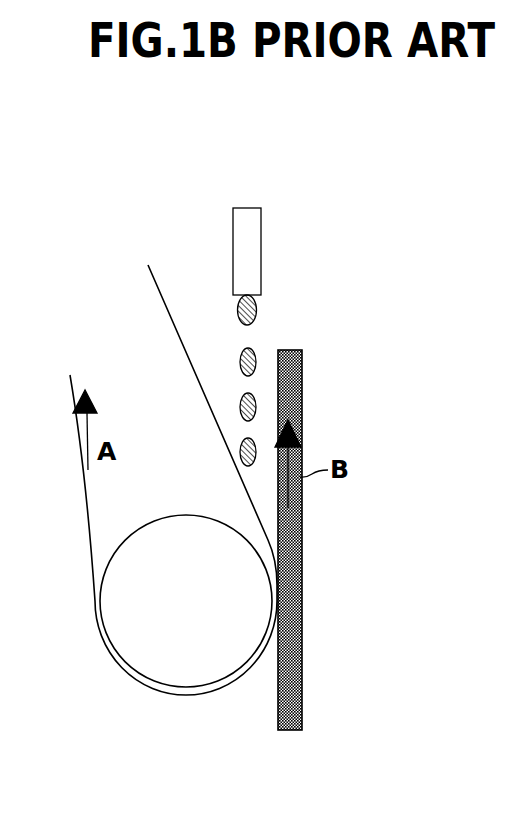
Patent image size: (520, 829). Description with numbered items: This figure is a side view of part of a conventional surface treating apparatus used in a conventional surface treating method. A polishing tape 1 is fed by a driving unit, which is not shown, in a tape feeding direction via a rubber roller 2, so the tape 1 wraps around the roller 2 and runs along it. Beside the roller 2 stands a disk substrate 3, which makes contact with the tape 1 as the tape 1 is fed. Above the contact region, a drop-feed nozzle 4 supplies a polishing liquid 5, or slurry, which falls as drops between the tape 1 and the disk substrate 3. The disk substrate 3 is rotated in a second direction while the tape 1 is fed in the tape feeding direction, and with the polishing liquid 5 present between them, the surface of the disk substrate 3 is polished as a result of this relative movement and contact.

The polishing tape 1 is at (171, 322).
The rubber roller 2 is at (140, 665).
The disk substrate 3 is at (312, 406).
The drop-feed nozzle 4 is at (252, 240).
The polishing liquid 5 is at (257, 304).